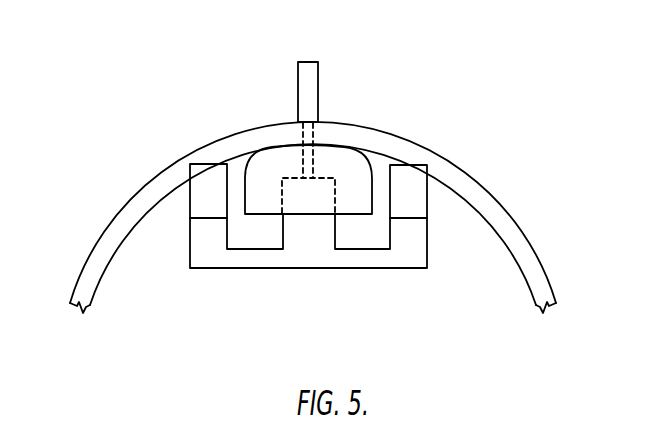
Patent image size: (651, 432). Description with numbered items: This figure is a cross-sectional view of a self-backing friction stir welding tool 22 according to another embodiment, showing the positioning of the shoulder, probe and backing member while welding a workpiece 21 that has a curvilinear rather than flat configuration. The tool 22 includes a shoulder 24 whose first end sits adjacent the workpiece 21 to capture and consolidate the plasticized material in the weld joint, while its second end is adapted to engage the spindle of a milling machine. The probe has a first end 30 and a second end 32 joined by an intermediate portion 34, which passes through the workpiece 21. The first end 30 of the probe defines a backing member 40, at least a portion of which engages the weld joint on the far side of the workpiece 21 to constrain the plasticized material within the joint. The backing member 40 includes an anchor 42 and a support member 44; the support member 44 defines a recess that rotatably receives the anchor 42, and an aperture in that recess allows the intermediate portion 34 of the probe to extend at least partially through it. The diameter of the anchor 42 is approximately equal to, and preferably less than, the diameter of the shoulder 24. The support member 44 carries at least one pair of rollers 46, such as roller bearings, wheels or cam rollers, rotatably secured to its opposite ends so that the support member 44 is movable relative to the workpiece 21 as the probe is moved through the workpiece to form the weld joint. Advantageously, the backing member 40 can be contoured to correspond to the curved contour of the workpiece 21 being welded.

The workpiece 21 is at (118, 213).
The self-backing friction stir welding tool 22 is at (308, 247).
The shoulder 24 is at (318, 78).
The first end of the probe 30 is at (369, 125).
The second end of the probe 32 is at (310, 121).
The intermediate portion of the probe 34 is at (313, 137).
The backing member 40 is at (323, 190).
The anchor 42 is at (303, 241).
The support member 44 is at (358, 203).
The rollers 46 is at (202, 203).